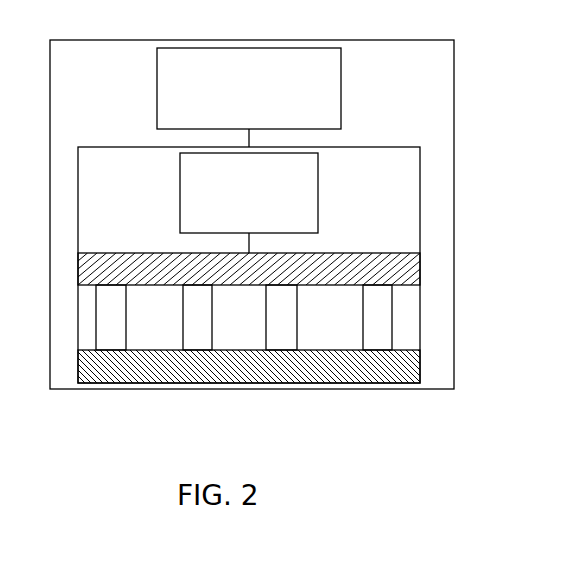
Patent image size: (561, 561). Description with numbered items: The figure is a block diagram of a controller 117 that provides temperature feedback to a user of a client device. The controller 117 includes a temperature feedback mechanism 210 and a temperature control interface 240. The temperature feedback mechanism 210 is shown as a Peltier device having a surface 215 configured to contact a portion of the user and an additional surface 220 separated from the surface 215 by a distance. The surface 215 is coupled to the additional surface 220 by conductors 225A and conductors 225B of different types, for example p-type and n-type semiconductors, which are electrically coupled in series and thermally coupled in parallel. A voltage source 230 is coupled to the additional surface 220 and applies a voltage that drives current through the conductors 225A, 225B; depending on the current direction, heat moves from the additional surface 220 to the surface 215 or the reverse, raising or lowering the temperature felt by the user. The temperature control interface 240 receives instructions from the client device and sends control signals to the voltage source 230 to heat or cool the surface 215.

The controller 117 is at (440, 40).
The temperature feedback mechanism 210 is at (375, 147).
The surface 215 is at (387, 377).
The additional surface 220 is at (150, 275).
The conductors 225A is at (112, 337).
The conductors 225B is at (202, 337).
The voltage source 230 is at (249, 203).
The temperature control interface 240 is at (249, 97).